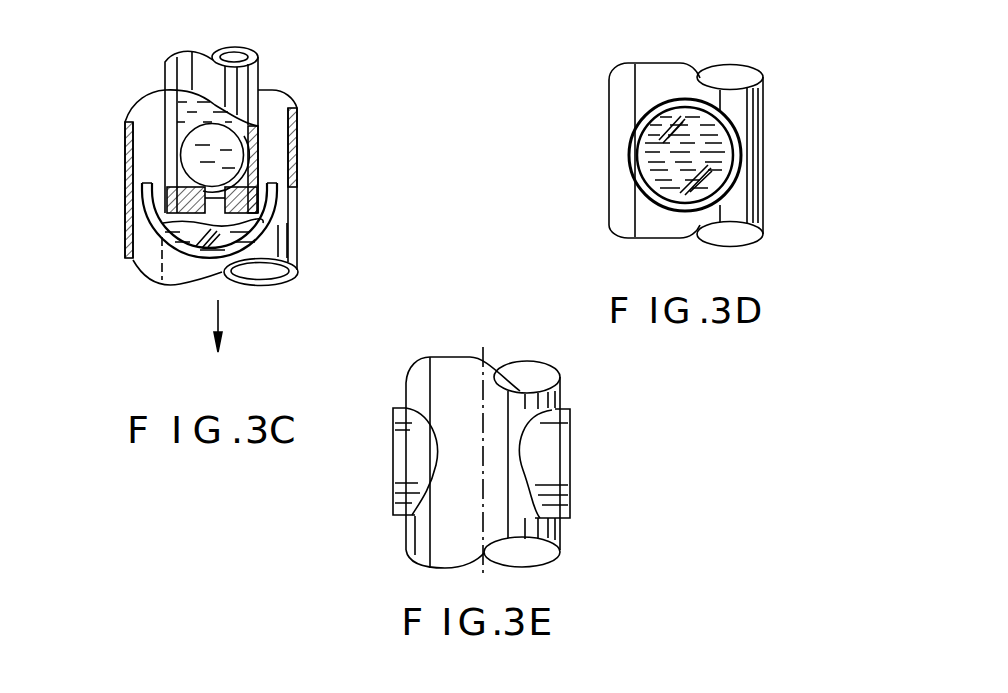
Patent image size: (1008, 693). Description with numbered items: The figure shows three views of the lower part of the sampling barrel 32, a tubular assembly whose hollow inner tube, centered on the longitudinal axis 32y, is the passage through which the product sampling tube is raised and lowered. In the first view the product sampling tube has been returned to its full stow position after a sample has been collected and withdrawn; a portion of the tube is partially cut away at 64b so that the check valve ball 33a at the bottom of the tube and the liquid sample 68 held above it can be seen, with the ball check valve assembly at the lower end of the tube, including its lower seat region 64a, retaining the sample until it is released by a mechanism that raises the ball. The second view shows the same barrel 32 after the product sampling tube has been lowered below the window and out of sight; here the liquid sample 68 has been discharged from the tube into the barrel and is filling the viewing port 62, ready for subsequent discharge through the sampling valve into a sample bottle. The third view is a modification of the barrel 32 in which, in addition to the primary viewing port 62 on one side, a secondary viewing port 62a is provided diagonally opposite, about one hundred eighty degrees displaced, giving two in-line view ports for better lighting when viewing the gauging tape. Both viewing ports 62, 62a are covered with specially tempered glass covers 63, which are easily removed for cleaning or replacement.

In FIG. 3C, the sampling barrel 32 is at (300, 225).
In FIG. 3D, the sampling barrel 32 is at (763, 97).
In FIG. 3E, the longitudinal axis 32y is at (483, 352).
In FIG. 3C, the check valve ball 33a is at (177, 153).
In FIG. 3C, the viewing port 62 is at (278, 186).
In FIG. 3D, the viewing port 62 is at (737, 142).
In FIG. 3E, the viewing port 62 is at (553, 433).
In FIG. 3E, the second viewing port 62a is at (400, 497).
In FIG. 3C, the tempered glass covers 63 is at (188, 233).
In FIG. 3D, the tempered glass covers 63 is at (722, 185).
In FIG. 3C, the lower seat member 64a is at (183, 212).
In FIG. 3C, the partially cut away portion 64b is at (258, 127).
In FIG. 3D, the liquid sample 68 is at (735, 158).